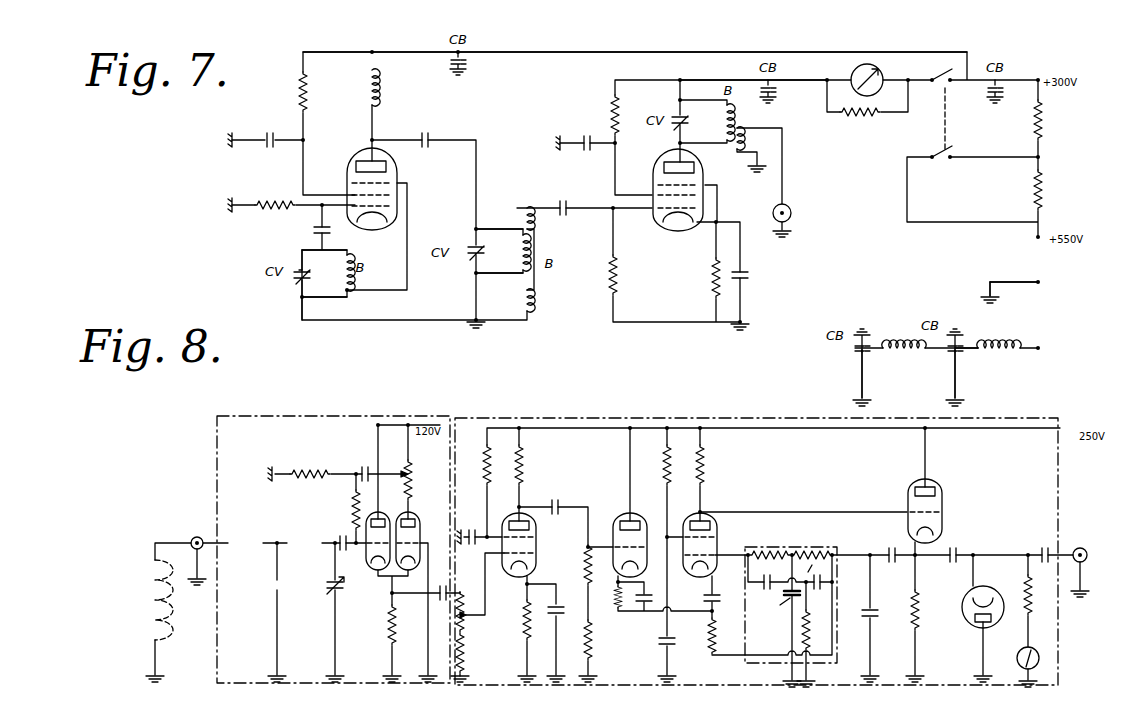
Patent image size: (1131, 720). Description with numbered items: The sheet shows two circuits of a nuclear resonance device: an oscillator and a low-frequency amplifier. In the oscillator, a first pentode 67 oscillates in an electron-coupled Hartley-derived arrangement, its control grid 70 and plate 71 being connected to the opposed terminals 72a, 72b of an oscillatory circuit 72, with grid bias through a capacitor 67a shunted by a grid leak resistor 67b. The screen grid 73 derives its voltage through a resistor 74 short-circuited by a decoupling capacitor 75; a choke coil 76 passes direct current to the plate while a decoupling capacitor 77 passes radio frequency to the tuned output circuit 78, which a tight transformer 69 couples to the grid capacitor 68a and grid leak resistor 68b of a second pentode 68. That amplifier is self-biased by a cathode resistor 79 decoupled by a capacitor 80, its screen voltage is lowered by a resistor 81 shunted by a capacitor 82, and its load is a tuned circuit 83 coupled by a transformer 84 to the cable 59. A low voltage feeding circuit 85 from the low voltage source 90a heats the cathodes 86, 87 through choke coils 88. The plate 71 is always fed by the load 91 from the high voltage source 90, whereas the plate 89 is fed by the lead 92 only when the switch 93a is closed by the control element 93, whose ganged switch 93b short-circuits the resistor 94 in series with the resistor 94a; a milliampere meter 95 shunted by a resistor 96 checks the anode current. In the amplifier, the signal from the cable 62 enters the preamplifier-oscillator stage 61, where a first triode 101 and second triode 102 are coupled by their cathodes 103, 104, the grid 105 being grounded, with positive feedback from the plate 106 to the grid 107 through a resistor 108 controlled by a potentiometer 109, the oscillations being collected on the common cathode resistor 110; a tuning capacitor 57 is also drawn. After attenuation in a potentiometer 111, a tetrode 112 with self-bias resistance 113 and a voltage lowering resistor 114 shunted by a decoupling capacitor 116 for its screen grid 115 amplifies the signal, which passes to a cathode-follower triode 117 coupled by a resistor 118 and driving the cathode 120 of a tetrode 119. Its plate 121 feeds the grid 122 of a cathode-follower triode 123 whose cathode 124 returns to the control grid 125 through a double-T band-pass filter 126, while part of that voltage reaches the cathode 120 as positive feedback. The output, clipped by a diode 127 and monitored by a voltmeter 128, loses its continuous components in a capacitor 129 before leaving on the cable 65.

In FIG. 7, the load 91 is at (640, 52).
In FIG. 7, the resistor 74 is at (313, 92).
In FIG. 7, the decoupling capacitor 75 is at (265, 129).
In FIG. 7, the choke coil 76 is at (385, 87).
In FIG. 7, the decoupling capacitor 77 is at (428, 130).
In FIG. 7, the first pentode 67 is at (398, 176).
In FIG. 8, the first pentode 67 is at (745, 419).
In FIG. 7, the plate 71 is at (360, 162).
In FIG. 7, the screen grid 73 is at (368, 194).
In FIG. 7, the control grid 70 is at (386, 207).
In FIG. 7, the cathode 86 is at (382, 226).
In FIG. 7, the grid leak resistor 67b is at (291, 196).
In FIG. 7, the capacitor 67a is at (307, 230).
In FIG. 7, the terminal 72a is at (325, 250).
In FIG. 7, the oscillatory circuit 72 is at (308, 278).
In FIG. 7, the terminal 72b is at (303, 298).
In FIG. 7, the tuned output circuit 78 is at (491, 276).
In FIG. 7, the transformer 69 is at (530, 243).
In FIG. 7, the resistor 81 is at (604, 114).
In FIG. 7, the decoupling capacitor 82 is at (575, 133).
In FIG. 7, the second pentode 68 is at (655, 168).
In FIG. 7, the grid capacitor 68a is at (563, 197).
In FIG. 7, the grid leak resistor 68b is at (600, 275).
In FIG. 7, the tuned circuit 83 is at (727, 120).
In FIG. 7, the transformer 84 is at (736, 150).
In FIG. 7, the plate 89 is at (690, 168).
In FIG. 7, the cathode 87 is at (666, 224).
In FIG. 7, the cathode resistor 79 is at (707, 278).
In FIG. 7, the capacitor 80 is at (750, 275).
In FIG. 7, the cable 59 is at (791, 213).
In FIG. 7, the lead 92 is at (797, 81).
In FIG. 7, the milliampere meter 95 is at (853, 71).
In FIG. 7, the resistor 96 is at (860, 120).
In FIG. 7, the switch 93a is at (933, 70).
In FIG. 7, the control element 93 is at (946, 112).
In FIG. 7, the switch 93b is at (932, 147).
In FIG. 7, the resistor 94a is at (1054, 120).
In FIG. 7, the resistor 94 is at (1049, 190).
In FIG. 7, the high voltage source 90 is at (1037, 257).
In FIG. 7, the low voltage source 90a is at (1040, 316).
In FIG. 7, the low voltage feeding circuit 85 is at (965, 347).
In FIG. 7, the choke coils 88 is at (951, 356).
In FIG. 8, the preamplifier-oscillator stage 61 is at (333, 541).
In FIG. 8, the cable 62 is at (199, 536).
In FIG. 8, the tuning capacitor 57 is at (340, 589).
In FIG. 8, the first triode 101 is at (368, 527).
In FIG. 8, the second triode 102 is at (414, 522).
In FIG. 8, the cathode 103 is at (371, 565).
In FIG. 8, the cathode 104 is at (416, 566).
In FIG. 8, the grid 105 is at (421, 542).
In FIG. 8, the plate 106 is at (416, 522).
In FIG. 8, the grid 107 is at (395, 540).
In FIG. 8, the resistor 108 is at (356, 505).
In FIG. 8, the potentiometer 109 is at (412, 470).
In FIG. 8, the common cathode resistor 110 is at (388, 627).
In FIG. 8, the voltage lowering resistor 114 is at (483, 469).
In FIG. 8, the decoupling capacitor 116 is at (465, 525).
In FIG. 8, the screen grid 115 is at (530, 538).
In FIG. 8, the tetrode 112 is at (536, 553).
In FIG. 8, the potentiometer 111 is at (463, 629).
In FIG. 8, the self-bias resistance 113 is at (524, 622).
In FIG. 8, the cathode-follower triode 117 is at (618, 516).
In FIG. 8, the resistor 118 is at (588, 573).
In FIG. 8, the plate 121 is at (712, 520).
In FIG. 8, the tetrode 119 is at (717, 538).
In FIG. 8, the control grid 125 is at (710, 556).
In FIG. 8, the cathode 120 is at (705, 569).
In FIG. 8, the band-pass filter 126 is at (772, 654).
In FIG. 8, the cathode-follower triode 123 is at (912, 490).
In FIG. 8, the grid 122 is at (940, 512).
In FIG. 8, the cathode 124 is at (914, 532).
In FIG. 8, the diode 127 is at (962, 604).
In FIG. 8, the voltmeter 128 is at (1039, 656).
In FIG. 8, the capacitor 129 is at (1041, 548).
In FIG. 8, the cable 65 is at (1080, 548).